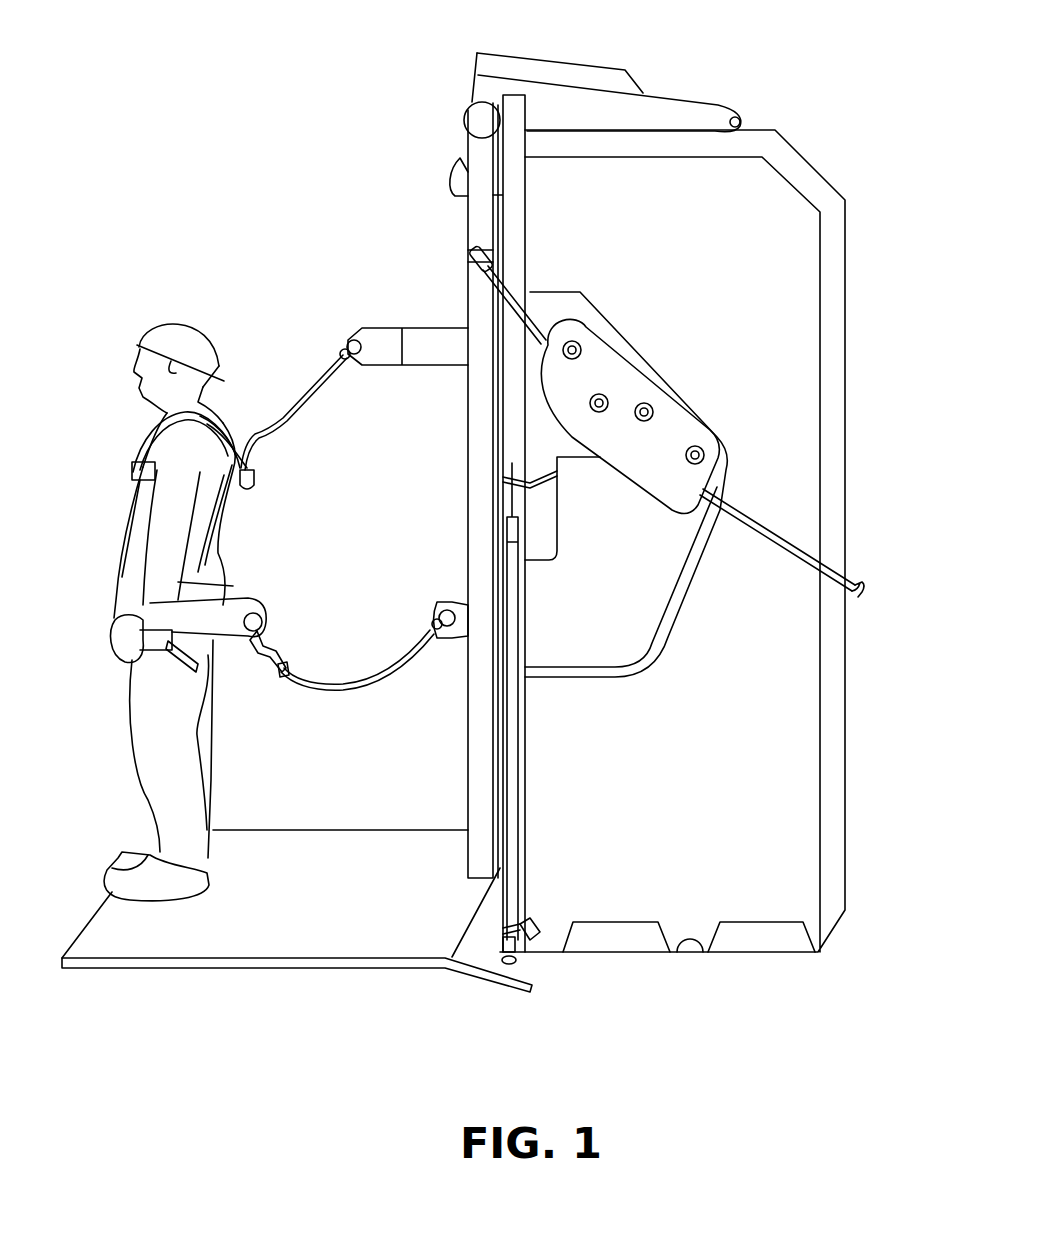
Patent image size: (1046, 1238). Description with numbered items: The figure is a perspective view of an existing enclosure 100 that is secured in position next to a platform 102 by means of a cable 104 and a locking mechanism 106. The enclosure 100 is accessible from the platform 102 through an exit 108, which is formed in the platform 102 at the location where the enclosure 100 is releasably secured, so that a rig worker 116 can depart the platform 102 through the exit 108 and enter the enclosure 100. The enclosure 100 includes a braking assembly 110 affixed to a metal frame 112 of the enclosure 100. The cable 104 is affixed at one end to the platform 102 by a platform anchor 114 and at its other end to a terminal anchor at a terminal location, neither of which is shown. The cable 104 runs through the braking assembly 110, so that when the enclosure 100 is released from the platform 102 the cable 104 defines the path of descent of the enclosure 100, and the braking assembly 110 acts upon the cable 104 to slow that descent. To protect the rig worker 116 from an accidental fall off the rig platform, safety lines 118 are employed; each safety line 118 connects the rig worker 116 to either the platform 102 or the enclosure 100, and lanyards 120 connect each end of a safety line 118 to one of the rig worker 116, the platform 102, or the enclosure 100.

The enclosure 100 is at (805, 111).
The platform 102 is at (267, 927).
The cable 104 is at (535, 322).
The locking mechanism 106 is at (525, 943).
The exit 108 is at (453, 793).
The braking assembly 110 is at (675, 427).
The metal frame 112 is at (773, 813).
The platform anchor 114 is at (473, 252).
The rig worker 116 is at (178, 318).
The safety line 118 is at (310, 403).
The lanyard 120 is at (347, 347).